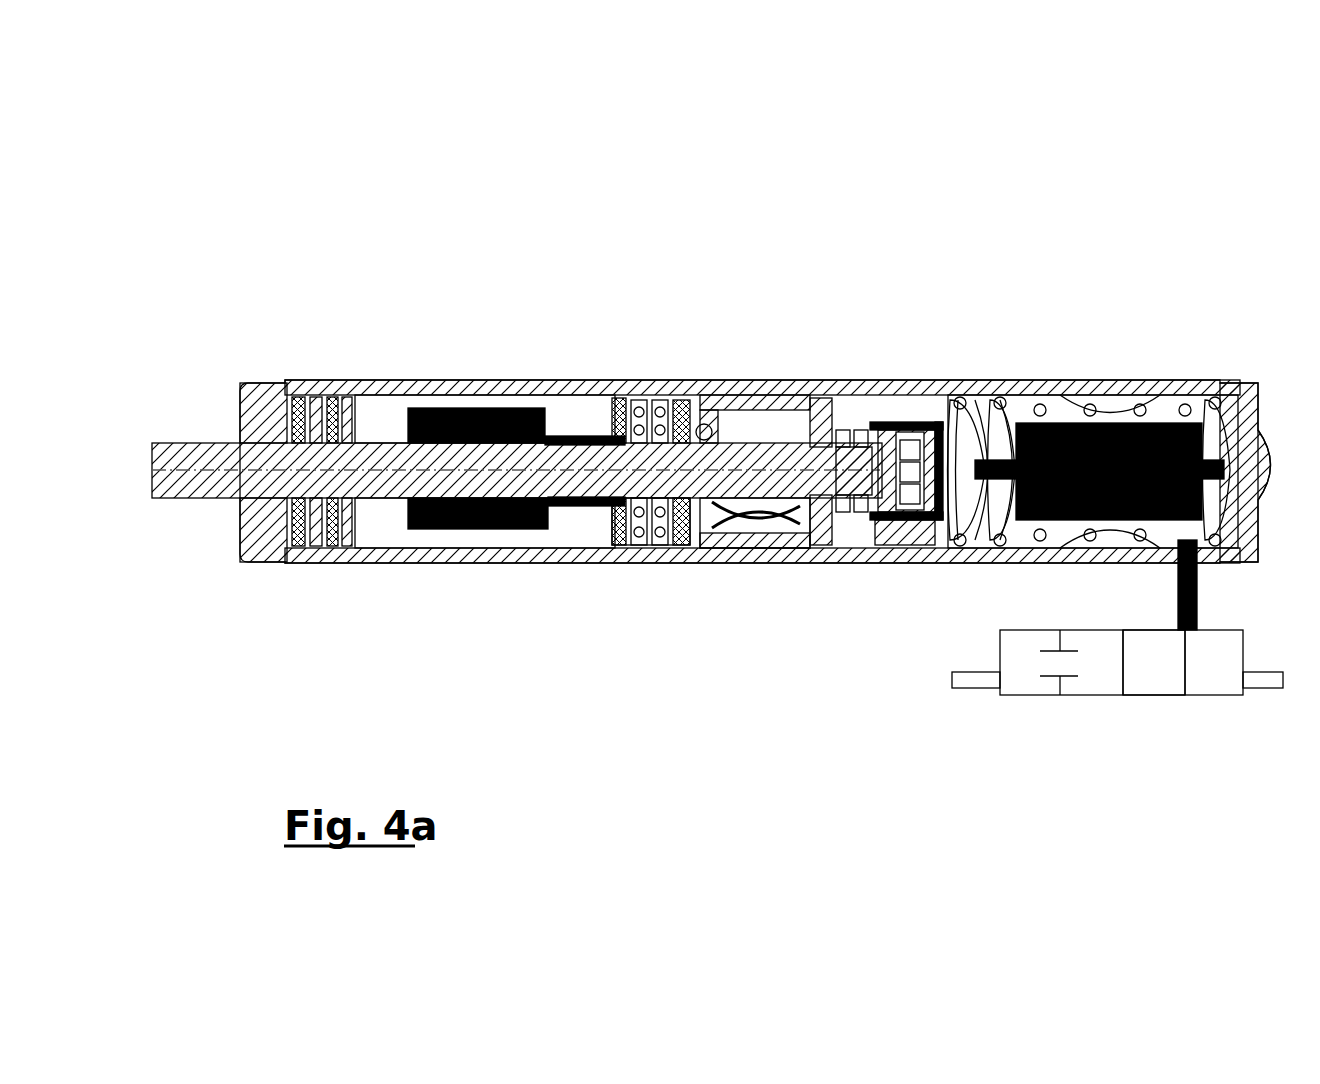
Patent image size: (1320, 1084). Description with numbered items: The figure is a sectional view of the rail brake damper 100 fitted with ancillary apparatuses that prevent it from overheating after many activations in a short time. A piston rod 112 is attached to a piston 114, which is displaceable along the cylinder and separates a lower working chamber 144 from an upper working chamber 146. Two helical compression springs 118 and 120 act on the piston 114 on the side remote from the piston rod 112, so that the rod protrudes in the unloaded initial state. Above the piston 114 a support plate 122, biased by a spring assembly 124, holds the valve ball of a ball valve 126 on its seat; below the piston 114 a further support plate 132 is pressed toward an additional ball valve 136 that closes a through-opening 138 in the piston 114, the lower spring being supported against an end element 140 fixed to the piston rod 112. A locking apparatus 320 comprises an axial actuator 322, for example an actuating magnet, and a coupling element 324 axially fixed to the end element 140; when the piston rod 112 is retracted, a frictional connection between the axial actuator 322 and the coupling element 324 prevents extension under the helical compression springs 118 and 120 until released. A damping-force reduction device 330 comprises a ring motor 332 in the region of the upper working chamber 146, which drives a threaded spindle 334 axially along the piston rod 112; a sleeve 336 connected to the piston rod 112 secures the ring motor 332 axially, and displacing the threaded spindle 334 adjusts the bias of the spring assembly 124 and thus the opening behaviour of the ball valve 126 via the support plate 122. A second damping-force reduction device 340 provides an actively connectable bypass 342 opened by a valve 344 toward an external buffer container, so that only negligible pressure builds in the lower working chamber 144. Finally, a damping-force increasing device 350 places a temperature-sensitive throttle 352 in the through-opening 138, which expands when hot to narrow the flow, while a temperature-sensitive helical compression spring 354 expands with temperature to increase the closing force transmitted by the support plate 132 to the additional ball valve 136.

The rail brake damper 100 is at (1133, 260).
The piston rod 112 is at (200, 487).
The piston 114 is at (748, 413).
The helical compression spring 118 is at (975, 525).
The helical compression spring 120 is at (1035, 528).
The support plate 122 is at (688, 415).
The spring assembly 124 is at (635, 523).
The ball valve 126 is at (700, 424).
The support plate 132 is at (822, 415).
The additional ball valve 136 is at (802, 520).
The through-opening 138 is at (718, 515).
The end element 140 is at (892, 410).
The lower working chamber 144 is at (1200, 407).
The upper working chamber 146 is at (645, 403).
The locking apparatus 320 is at (975, 270).
The axial actuator 322 is at (1105, 430).
The coupling element 324 is at (905, 417).
The damping-force reduction device 330 is at (482, 268).
The ring motor 332 is at (465, 428).
The threaded spindle 334 is at (563, 434).
The sleeve 336 is at (375, 438).
The damping-force reduction device 340 is at (975, 745).
The bypass 342 is at (1180, 583).
The valve 344 is at (1140, 672).
The damping-force increasing device 350 is at (730, 635).
The temperature-sensitive throttle 352 is at (732, 525).
The temperature-sensitive helical compression spring 354 is at (853, 512).